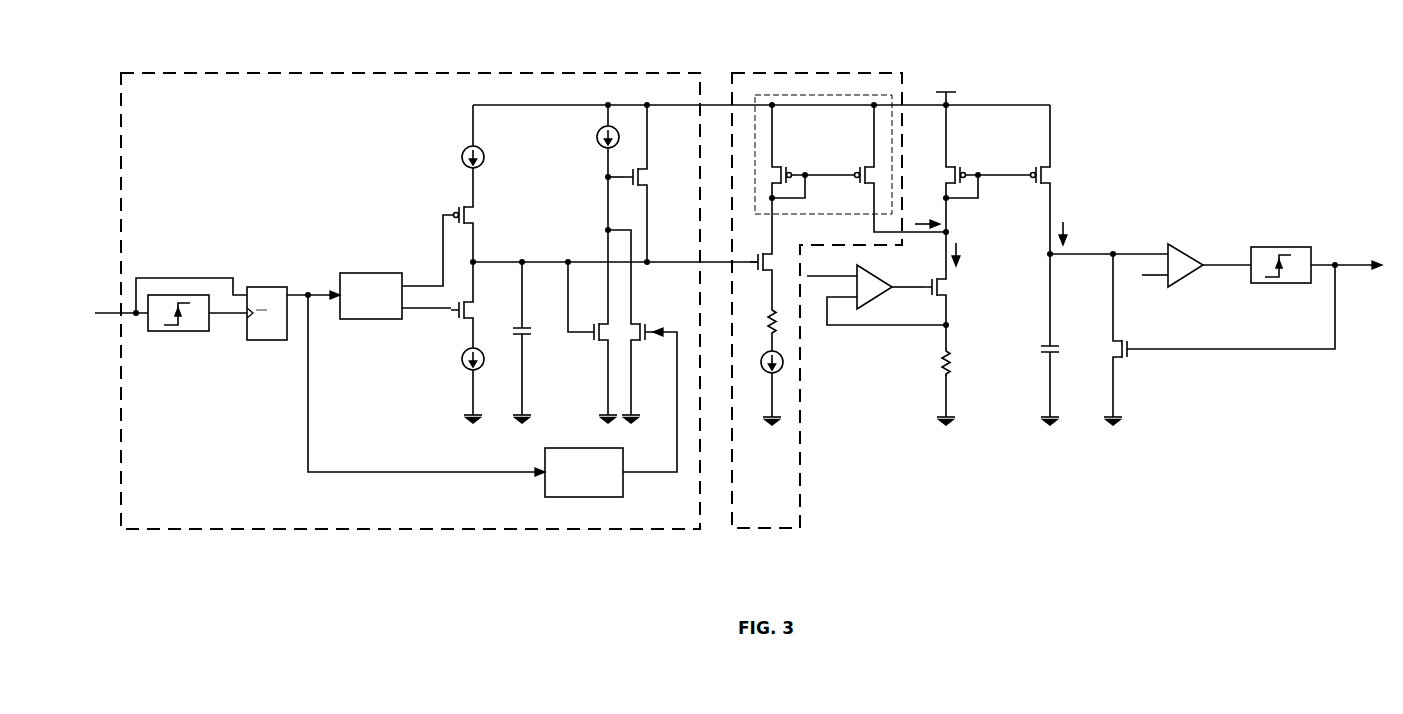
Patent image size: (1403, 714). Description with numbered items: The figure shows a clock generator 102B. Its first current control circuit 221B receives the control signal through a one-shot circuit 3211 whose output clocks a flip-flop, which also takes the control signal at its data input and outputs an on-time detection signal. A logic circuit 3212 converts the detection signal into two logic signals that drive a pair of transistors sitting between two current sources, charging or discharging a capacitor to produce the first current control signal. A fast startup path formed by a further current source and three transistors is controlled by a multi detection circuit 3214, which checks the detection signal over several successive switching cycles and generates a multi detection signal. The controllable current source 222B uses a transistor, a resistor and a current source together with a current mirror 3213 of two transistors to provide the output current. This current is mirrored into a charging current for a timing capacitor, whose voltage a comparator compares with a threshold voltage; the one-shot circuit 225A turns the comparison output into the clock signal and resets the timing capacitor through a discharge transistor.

The clock generator 102B is at (1244, 132).
The first current control circuit 221B is at (136, 533).
The controllable current source 222B is at (762, 533).
The one-shot circuit 3211 is at (169, 332).
The logic circuit 3212 is at (365, 322).
The current mirror 3213 is at (843, 219).
The multi detection circuit 3214 is at (552, 496).
The one-shot circuit 225A is at (1261, 284).